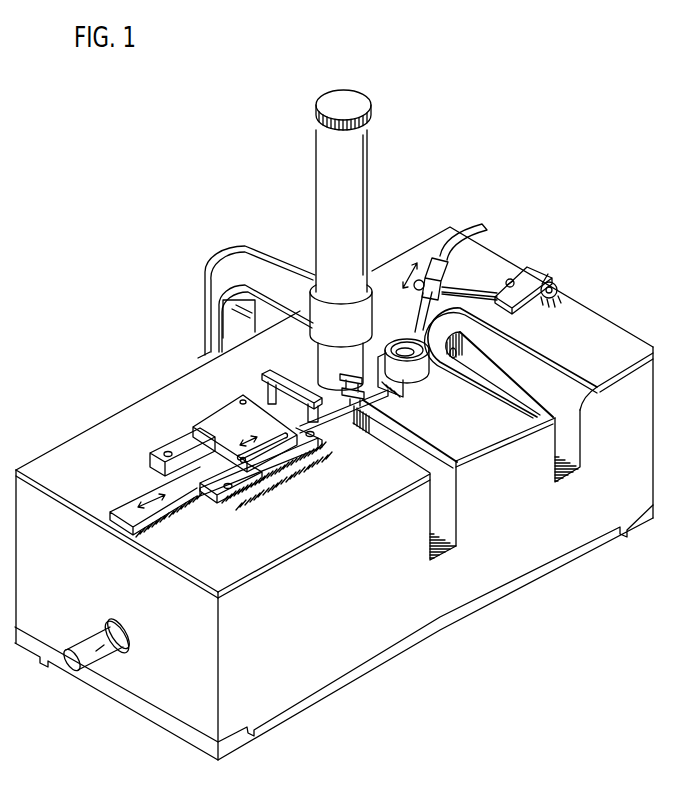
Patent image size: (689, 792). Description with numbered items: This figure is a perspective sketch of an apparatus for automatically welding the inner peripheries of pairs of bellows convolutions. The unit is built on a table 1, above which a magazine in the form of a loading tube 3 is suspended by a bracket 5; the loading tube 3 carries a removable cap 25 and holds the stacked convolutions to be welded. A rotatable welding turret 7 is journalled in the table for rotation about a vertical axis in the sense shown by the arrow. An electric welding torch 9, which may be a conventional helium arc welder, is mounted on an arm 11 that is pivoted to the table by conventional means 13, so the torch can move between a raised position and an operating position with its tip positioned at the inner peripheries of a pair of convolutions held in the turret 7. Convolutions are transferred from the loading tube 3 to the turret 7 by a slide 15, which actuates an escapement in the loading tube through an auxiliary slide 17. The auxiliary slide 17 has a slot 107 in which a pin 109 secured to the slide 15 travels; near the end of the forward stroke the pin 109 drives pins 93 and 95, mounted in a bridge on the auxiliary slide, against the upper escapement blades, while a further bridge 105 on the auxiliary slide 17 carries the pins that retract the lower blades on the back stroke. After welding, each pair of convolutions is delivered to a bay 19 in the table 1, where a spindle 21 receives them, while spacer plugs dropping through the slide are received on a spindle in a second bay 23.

The table 1 is at (183, 624).
The loading tube 3 is at (367, 160).
The bracket 5 is at (217, 263).
The welding turret 7 is at (395, 333).
The electric welding torch 9 is at (424, 303).
The arm 11 is at (465, 292).
The pivot means 13 is at (570, 285).
The slide 15 is at (143, 496).
The auxiliary slide 17 is at (196, 452).
The bay 19 is at (574, 440).
The spindle 21 is at (457, 355).
The bay 23 is at (453, 503).
The removable cap 25 is at (348, 98).
The pin 93 is at (336, 380).
The pin 95 is at (300, 381).
The bridge 105 is at (380, 398).
The slot 107 is at (268, 436).
The pin 109 is at (222, 407).